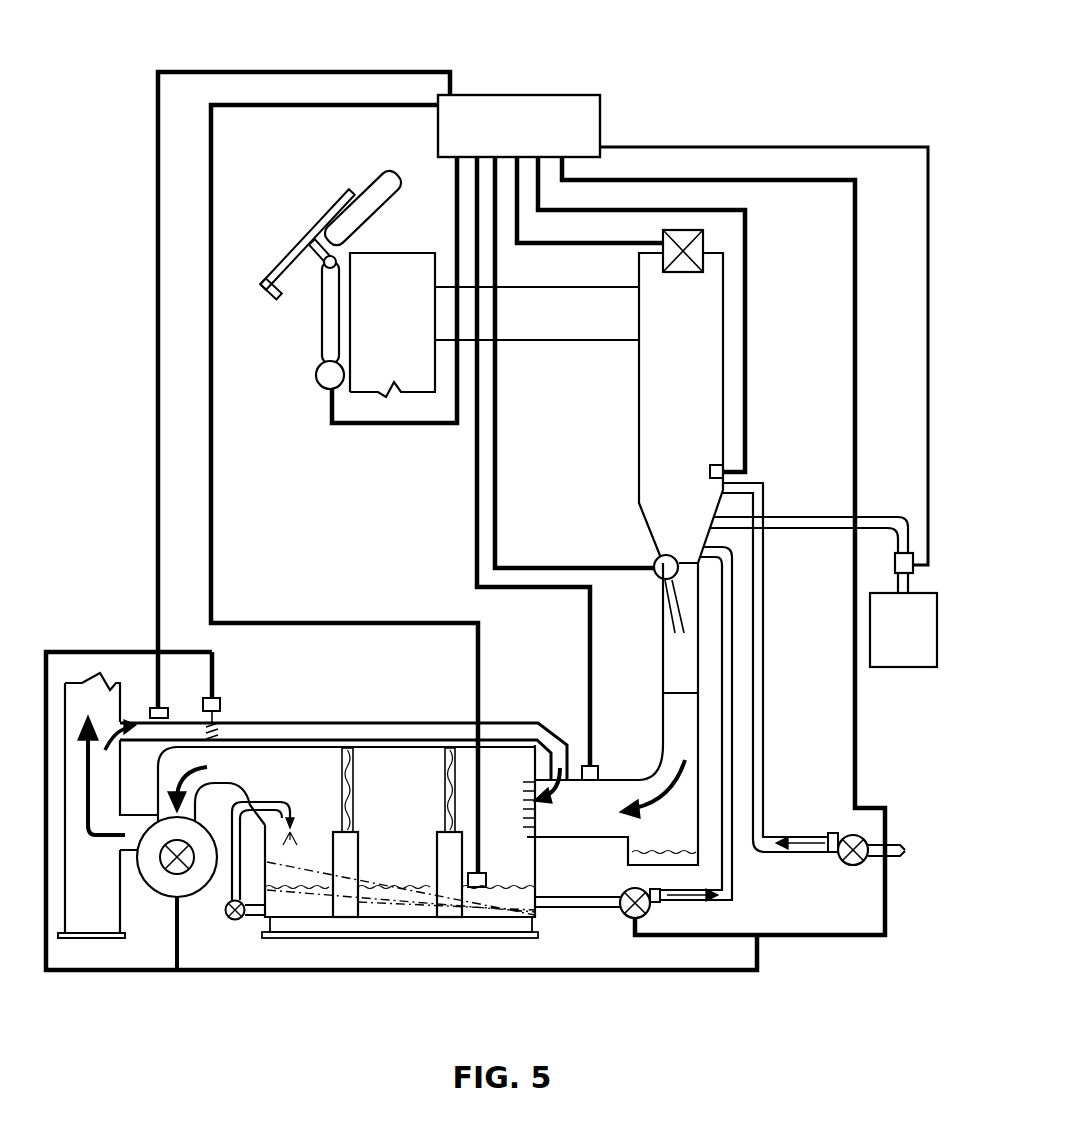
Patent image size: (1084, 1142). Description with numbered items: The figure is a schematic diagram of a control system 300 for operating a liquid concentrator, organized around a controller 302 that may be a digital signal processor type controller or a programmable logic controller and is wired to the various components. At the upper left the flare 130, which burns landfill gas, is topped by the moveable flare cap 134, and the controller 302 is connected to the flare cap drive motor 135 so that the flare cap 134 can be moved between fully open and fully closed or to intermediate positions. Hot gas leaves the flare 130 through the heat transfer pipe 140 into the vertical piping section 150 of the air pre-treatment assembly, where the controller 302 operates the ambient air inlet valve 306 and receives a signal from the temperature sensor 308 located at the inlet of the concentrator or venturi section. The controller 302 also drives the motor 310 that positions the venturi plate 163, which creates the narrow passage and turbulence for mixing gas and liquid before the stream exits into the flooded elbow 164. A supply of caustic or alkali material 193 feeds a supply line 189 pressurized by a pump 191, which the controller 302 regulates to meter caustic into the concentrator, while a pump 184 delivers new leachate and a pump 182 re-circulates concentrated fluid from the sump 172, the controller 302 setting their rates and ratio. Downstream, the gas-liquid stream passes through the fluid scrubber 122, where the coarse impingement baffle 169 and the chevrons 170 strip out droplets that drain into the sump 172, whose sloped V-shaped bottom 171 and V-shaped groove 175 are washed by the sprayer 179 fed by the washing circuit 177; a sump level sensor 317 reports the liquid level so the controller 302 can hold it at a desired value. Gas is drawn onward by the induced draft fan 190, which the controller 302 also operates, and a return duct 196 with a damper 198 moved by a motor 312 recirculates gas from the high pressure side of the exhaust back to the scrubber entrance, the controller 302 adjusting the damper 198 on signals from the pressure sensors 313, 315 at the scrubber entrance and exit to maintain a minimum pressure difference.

The control system 300 is at (692, 94).
The controller 302 is at (516, 93).
The flare 130 is at (392, 325).
The flare cap 134 is at (366, 184).
The flare cap drive motor 135 is at (317, 386).
The heat transfer pipe 140 is at (537, 313).
The vertical piping section 150 is at (681, 408).
The ambient air inlet valve 306 is at (684, 275).
The temperature sensor 308 is at (710, 470).
The motor 310 is at (656, 559).
The venturi plate 163 is at (672, 608).
The flooded elbow 164 is at (648, 772).
The supply line 189 is at (890, 516).
The pump 191 is at (913, 567).
The supply of caustic or alkali material 193 is at (918, 655).
The pump 184 is at (853, 866).
The pump 182 is at (628, 890).
The coarse impingement baffle 169 is at (500, 868).
The chevrons 170 is at (445, 793).
The sump 172 is at (395, 908).
The V-shaped groove 175 is at (316, 891).
The V-shaped bottom 171 is at (300, 867).
The fluid scrubber 122 is at (526, 840).
The sump level sensor 317 is at (478, 888).
The washing circuit 177 is at (222, 930).
The sprayer 179 is at (290, 817).
The induced draft fan 190 is at (157, 880).
The return duct 196 is at (387, 722).
The damper 198 is at (222, 724).
The motor 312 is at (220, 698).
The pressure sensor 313 is at (155, 706).
The pressure sensor 315 is at (588, 764).